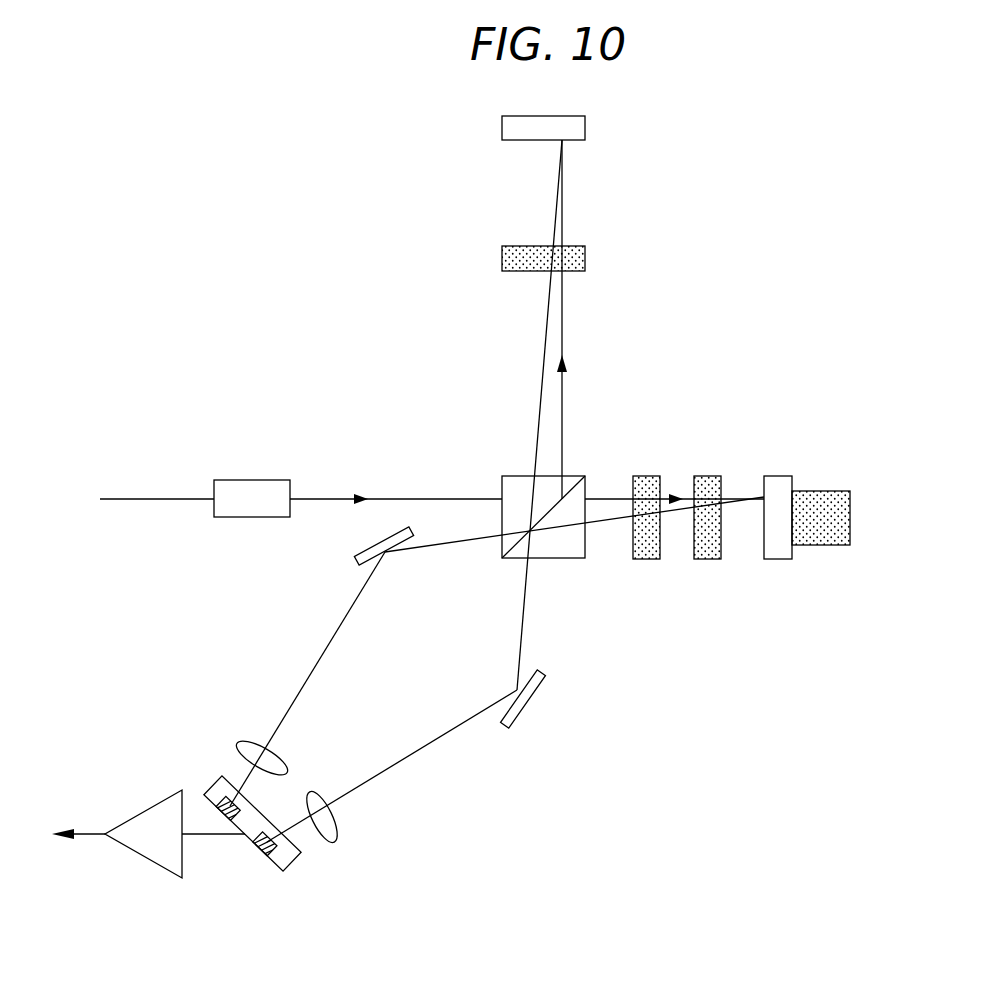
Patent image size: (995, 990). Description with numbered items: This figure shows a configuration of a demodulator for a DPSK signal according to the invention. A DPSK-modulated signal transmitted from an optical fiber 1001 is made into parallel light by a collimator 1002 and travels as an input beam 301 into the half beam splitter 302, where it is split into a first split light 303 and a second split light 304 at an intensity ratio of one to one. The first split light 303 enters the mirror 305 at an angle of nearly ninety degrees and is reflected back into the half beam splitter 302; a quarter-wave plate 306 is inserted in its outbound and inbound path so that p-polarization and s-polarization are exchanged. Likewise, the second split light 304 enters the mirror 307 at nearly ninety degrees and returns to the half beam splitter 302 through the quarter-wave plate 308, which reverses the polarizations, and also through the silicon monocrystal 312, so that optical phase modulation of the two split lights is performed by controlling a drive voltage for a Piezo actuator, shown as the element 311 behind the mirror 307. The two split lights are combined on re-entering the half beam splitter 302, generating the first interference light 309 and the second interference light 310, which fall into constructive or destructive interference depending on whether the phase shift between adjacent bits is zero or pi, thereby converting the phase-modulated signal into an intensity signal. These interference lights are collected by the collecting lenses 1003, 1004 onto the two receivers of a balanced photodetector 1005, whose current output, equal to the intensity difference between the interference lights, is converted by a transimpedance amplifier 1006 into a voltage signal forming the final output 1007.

The optical fiber 1001 is at (158, 498).
The collimator 1002 is at (253, 480).
The light beam 301 is at (427, 498).
The half beam splitter 302 is at (516, 476).
The first split light 303 is at (563, 323).
The second split light 304 is at (608, 498).
The mirror 305 is at (586, 126).
The quarter-wave plate 306 is at (586, 256).
The mirror 307 is at (778, 560).
The quarter-wave plate 308 is at (646, 560).
The first interference light 309 is at (437, 546).
The second interference light 310 is at (517, 662).
The sample 311 is at (825, 546).
The silicon monocrystal 312 is at (707, 560).
The lens 1003 is at (246, 742).
The lens 1004 is at (340, 828).
The detector 1005 is at (298, 852).
The amplifier 1006 is at (152, 806).
The output signal 1007 is at (84, 832).